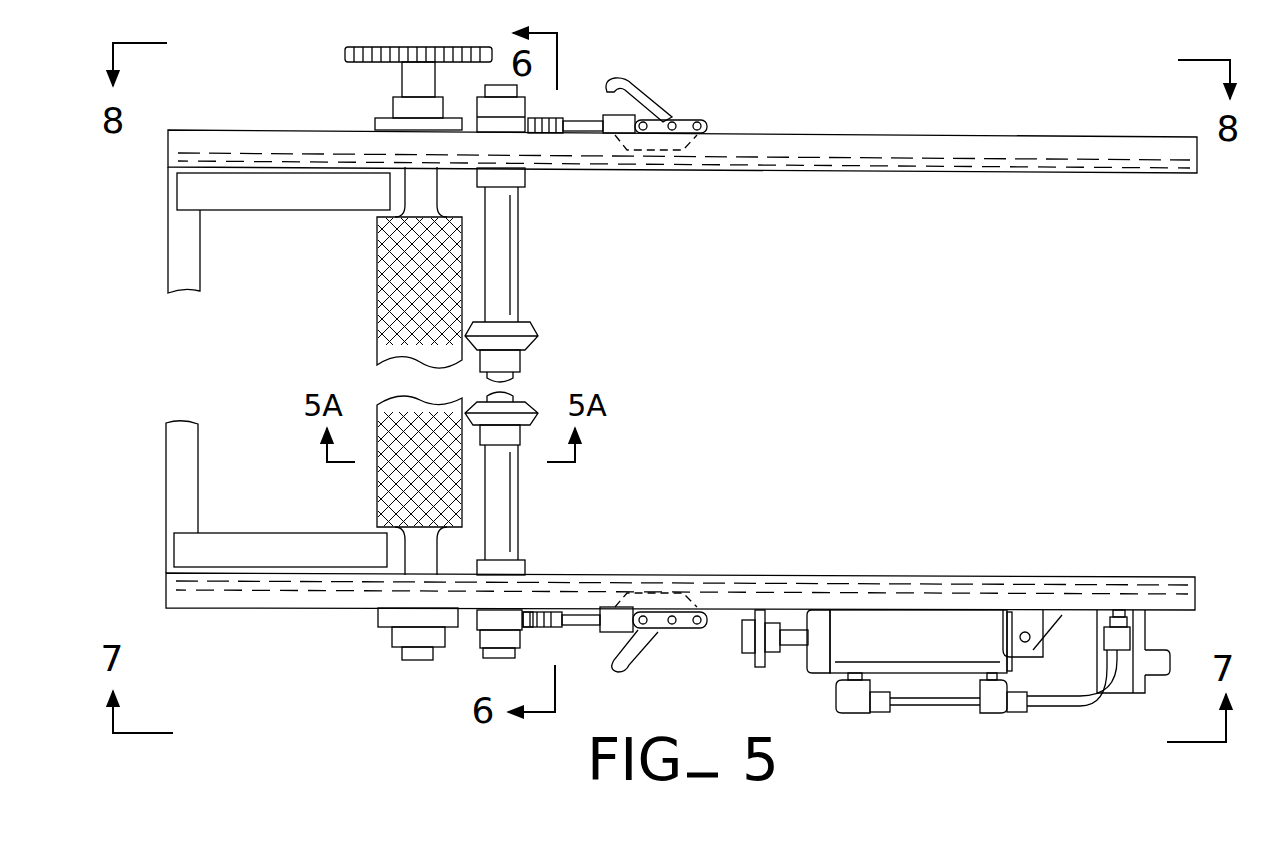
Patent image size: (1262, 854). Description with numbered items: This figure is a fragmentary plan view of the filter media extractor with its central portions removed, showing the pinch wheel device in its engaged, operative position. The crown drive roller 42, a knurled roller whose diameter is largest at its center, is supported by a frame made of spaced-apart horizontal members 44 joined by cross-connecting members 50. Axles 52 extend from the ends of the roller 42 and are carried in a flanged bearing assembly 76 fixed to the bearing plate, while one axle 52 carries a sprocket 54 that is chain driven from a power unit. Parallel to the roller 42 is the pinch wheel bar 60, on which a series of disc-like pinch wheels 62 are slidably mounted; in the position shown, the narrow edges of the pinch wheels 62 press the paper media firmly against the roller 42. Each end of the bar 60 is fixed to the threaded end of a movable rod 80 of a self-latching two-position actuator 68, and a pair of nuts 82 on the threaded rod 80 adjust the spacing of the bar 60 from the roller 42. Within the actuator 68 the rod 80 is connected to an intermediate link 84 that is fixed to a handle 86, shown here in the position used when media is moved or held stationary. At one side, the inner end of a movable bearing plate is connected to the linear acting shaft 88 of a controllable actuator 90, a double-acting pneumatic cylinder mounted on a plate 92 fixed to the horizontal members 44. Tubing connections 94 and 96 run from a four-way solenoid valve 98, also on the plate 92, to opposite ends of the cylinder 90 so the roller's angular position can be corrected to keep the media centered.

The drive roller 42 is at (377, 285).
The horizontal members 44 is at (278, 130).
The cross-connecting members 50 is at (165, 488).
The axle 52 is at (402, 658).
The sprocket 54 is at (390, 47).
The pinch wheel bar 60 is at (518, 283).
The pinch wheels 62 is at (538, 337).
The two-position actuator 68 is at (678, 106).
The flanged bearing assembly 76 is at (378, 617).
The movable rod 80 is at (547, 118).
The nuts 82 is at (558, 628).
The intermediate link 84 is at (640, 628).
The handle 86 is at (640, 78).
The linear acting shaft 88 is at (780, 640).
The controllable actuator 90 is at (925, 642).
The plate 92 is at (1177, 620).
The tubing connection 94 is at (928, 703).
The tubing connection 96 is at (1055, 707).
The four-way solenoid valve 98 is at (1092, 638).